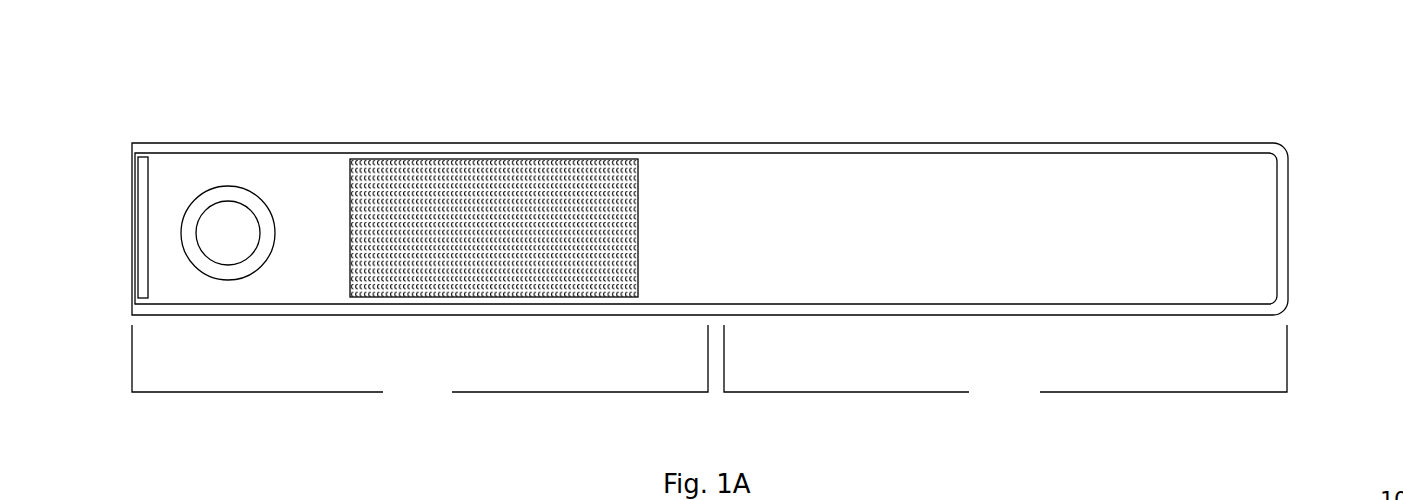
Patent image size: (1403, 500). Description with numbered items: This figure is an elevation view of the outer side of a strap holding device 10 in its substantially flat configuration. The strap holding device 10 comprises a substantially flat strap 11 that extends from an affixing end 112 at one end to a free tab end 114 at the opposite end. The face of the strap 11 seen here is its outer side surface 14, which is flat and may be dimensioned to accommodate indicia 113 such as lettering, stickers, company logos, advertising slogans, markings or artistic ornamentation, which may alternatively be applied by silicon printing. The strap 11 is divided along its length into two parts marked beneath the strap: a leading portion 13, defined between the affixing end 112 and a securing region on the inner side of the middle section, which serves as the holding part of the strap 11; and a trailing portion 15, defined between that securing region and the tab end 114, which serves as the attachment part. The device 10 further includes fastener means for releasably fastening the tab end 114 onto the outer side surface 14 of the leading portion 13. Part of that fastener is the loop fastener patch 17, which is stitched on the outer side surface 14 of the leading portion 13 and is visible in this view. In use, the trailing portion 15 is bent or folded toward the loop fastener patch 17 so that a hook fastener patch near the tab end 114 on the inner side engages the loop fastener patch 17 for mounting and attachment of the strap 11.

The strap holding device 10 is at (720, 173).
The strap 11 is at (767, 184).
The affixing end 112 is at (132, 216).
The indicia 113 is at (225, 223).
The free tab end 114 is at (1288, 230).
The leading portion 13 is at (420, 365).
The outer side surface 14 is at (767, 210).
The trailing portion 15 is at (1005, 365).
The loop fastener patch 17 is at (541, 178).